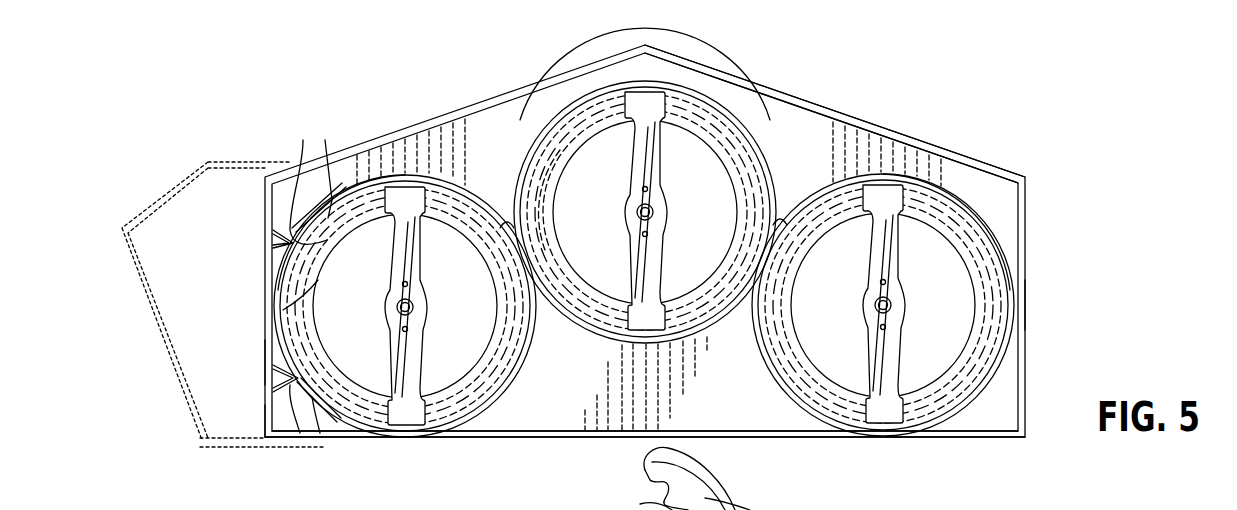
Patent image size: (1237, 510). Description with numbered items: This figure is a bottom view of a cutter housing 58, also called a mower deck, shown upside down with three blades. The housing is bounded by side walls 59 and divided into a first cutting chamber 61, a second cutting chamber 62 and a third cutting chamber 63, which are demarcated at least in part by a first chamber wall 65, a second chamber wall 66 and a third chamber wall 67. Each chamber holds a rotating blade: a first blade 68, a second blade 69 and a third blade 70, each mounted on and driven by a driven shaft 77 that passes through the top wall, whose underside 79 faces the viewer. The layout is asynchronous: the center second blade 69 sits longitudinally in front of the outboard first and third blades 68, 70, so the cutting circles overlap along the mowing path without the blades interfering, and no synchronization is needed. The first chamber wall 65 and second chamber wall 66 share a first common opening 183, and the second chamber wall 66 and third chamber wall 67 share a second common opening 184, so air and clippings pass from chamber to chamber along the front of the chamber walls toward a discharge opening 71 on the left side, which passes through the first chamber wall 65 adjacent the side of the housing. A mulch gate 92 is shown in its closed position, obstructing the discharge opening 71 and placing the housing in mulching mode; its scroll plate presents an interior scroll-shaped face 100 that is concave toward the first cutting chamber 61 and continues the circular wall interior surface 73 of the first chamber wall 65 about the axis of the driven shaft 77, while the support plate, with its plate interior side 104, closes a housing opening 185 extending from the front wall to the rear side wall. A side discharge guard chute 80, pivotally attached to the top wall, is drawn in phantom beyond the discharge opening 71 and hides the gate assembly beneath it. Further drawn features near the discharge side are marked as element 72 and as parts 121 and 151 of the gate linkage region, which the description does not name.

The cutter housing 58 is at (1046, 300).
The side walls 59 is at (1026, 208).
The first cutting chamber 61 is at (443, 383).
The second cutting chamber 62 is at (697, 133).
The third cutting chamber 63 is at (917, 230).
The first chamber wall 65 is at (405, 176).
The second chamber wall 66 is at (610, 80).
The third chamber wall 67 is at (927, 228).
The first blade 68 is at (408, 270).
The second blade 69 is at (650, 163).
The third blade 70 is at (895, 272).
The discharge opening 71 is at (327, 242).
The discharge baffle 72 is at (300, 232).
The wall interior surface 73 is at (330, 233).
The driven shaft 77 is at (898, 306).
The underside 79 is at (585, 155).
The side discharge guard chute 80 is at (142, 292).
The mulch gate 92 is at (265, 362).
The interior scroll-shaped face 100 is at (297, 312).
The plate interior side 104 is at (752, 509).
The bracket 121 is at (640, 504).
The cam member 151 is at (645, 470).
The first common opening 183 is at (507, 222).
The second common opening 184 is at (780, 218).
The housing opening 185 is at (280, 438).